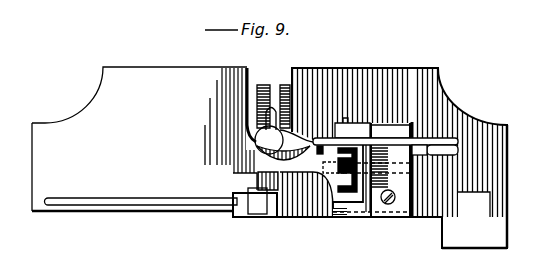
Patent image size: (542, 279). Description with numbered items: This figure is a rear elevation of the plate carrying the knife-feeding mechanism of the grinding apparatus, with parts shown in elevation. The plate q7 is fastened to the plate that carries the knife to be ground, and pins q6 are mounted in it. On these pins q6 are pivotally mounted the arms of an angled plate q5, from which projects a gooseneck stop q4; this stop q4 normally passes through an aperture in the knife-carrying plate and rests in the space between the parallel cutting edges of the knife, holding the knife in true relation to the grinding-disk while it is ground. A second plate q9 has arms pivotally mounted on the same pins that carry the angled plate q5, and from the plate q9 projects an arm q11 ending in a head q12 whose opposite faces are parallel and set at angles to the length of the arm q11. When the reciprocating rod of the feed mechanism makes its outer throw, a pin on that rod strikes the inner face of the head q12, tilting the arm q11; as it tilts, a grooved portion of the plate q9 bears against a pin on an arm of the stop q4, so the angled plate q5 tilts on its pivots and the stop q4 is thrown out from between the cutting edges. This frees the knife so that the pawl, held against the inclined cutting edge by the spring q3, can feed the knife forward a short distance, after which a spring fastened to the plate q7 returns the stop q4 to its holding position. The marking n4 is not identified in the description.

The casing body n4 is at (112, 130).
The stop q4 is at (256, 138).
The plate q9 is at (265, 163).
The plate q7 is at (400, 128).
The pins q6 is at (153, 199).
The angled plate q5 is at (257, 220).
The spring q3 is at (276, 206).
The head q12 is at (244, 172).
The arm q11 is at (316, 160).